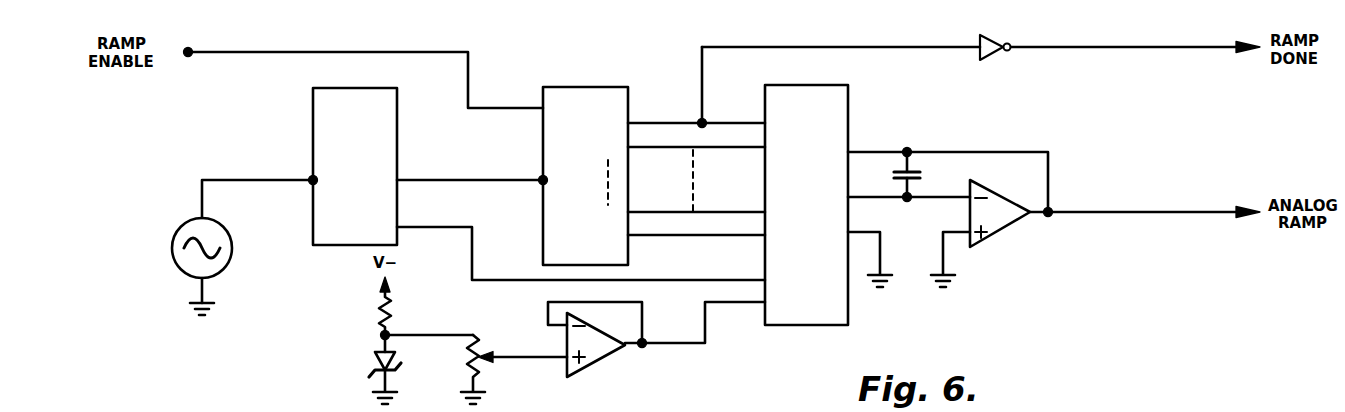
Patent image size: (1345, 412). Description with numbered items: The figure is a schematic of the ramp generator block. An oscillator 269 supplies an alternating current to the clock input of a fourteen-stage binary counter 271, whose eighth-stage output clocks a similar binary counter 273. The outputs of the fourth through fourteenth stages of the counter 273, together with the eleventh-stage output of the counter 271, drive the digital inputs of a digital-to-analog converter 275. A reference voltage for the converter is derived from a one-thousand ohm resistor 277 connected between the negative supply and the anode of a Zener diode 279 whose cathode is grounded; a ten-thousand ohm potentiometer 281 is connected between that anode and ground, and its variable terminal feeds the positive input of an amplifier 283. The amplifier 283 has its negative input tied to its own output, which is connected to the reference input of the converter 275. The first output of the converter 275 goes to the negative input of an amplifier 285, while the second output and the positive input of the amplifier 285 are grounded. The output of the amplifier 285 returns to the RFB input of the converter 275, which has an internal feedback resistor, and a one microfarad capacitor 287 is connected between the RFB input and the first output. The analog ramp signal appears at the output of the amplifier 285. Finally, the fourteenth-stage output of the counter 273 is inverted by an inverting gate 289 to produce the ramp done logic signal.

The oscillator 269 is at (172, 259).
The binary counter 271 is at (313, 101).
The binary counter 273 is at (572, 87).
The digital-to-analog converter 275 is at (850, 323).
The resistor 277 is at (379, 313).
The Zener diode 279 is at (375, 365).
The potentiometer 281 is at (480, 344).
The amplifier 283 is at (604, 356).
The amplifier 285 is at (1003, 232).
The capacitor 287 is at (915, 172).
The inverting gate 289 is at (986, 60).